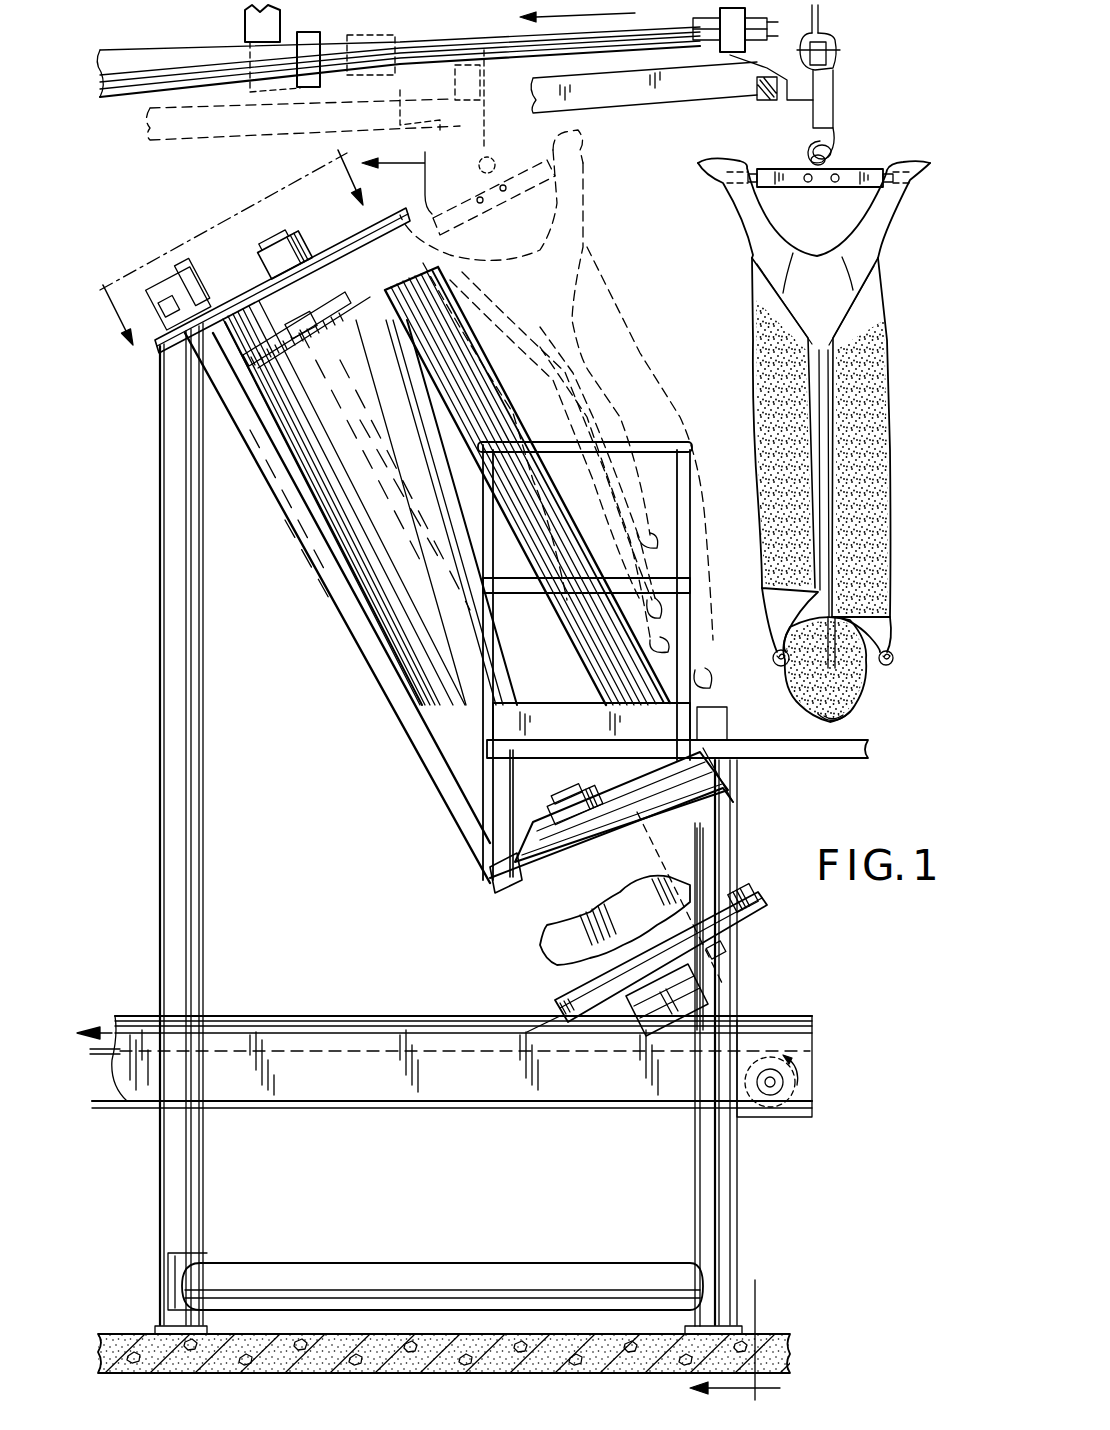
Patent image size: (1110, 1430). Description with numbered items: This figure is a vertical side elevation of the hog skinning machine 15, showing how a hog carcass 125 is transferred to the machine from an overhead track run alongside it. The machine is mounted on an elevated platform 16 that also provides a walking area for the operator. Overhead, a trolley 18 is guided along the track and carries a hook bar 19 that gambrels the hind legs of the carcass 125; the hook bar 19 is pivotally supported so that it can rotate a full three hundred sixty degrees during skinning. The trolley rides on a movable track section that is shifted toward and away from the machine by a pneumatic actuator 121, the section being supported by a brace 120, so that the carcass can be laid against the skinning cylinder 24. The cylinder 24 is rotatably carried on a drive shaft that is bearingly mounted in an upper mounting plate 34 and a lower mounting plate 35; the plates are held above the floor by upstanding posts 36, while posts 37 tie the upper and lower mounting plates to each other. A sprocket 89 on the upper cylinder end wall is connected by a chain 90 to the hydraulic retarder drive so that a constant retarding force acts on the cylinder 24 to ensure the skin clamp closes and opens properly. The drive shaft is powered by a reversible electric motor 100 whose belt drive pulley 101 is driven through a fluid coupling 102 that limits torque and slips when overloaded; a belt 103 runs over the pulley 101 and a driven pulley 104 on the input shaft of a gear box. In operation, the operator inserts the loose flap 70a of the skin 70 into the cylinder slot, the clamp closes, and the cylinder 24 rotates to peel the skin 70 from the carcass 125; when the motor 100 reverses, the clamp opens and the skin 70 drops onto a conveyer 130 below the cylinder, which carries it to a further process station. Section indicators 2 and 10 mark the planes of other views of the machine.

The pneumatic actuator 121 is at (144, 57).
The trolley 18 is at (843, 53).
The hook bar 19 is at (862, 168).
The hog carcass 125 is at (865, 245).
The skin 70 is at (869, 358).
The loose flap of skin 70a is at (818, 428).
The brace 120 is at (638, 92).
The hog skinning machine 15 is at (212, 226).
The section line 10- 10 is at (221, 227).
The section line 2- 2 is at (593, 774).
The upper mounting plate 34 is at (367, 229).
The chain 90 is at (272, 343).
The sprocket 89 is at (303, 340).
The skinning cylinder 24 is at (397, 567).
The posts 37 is at (463, 640).
The platform 16 is at (478, 758).
The lower mounting plate 35 is at (502, 878).
The electric motor 100 is at (540, 952).
The belt drive pulley 101 is at (677, 948).
The driven pulley 104 is at (552, 1003).
The fluid coupling 102 is at (627, 1020).
The belt 103 is at (527, 1032).
The conveyer 130 is at (287, 1022).
The upstanding posts 36 is at (178, 1172).